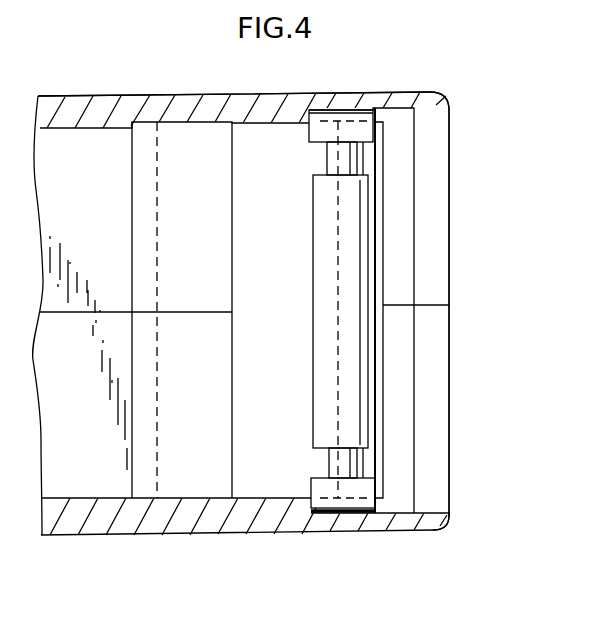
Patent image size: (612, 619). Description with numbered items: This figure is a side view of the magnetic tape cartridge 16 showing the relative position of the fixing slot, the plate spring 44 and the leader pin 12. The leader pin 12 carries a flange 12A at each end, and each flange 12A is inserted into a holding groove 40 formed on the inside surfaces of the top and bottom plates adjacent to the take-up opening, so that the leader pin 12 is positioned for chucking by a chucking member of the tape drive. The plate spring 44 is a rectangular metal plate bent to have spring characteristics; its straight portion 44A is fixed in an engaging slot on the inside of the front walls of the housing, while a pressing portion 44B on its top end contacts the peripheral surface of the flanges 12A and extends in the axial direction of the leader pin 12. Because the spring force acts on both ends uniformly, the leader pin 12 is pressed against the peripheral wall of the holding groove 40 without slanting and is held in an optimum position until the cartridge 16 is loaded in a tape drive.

The holding groove 40 is at (392, 107).
The magnetic tape cartridge 16 is at (531, 131).
The pressing portion 44B is at (367, 157).
The leader pin 12 is at (400, 254).
The flange 12A is at (320, 130).
The straight portion 44A is at (157, 168).
The plate spring 44 is at (278, 456).